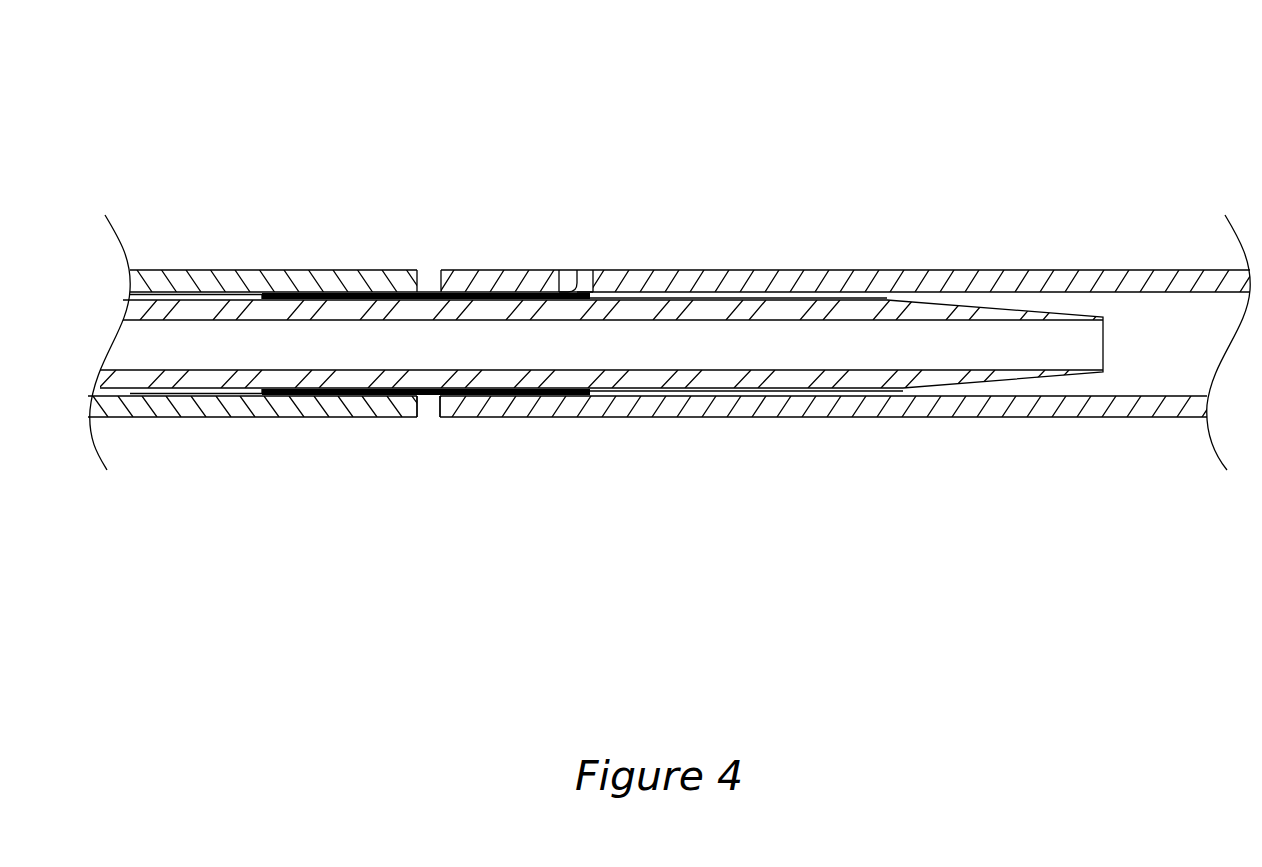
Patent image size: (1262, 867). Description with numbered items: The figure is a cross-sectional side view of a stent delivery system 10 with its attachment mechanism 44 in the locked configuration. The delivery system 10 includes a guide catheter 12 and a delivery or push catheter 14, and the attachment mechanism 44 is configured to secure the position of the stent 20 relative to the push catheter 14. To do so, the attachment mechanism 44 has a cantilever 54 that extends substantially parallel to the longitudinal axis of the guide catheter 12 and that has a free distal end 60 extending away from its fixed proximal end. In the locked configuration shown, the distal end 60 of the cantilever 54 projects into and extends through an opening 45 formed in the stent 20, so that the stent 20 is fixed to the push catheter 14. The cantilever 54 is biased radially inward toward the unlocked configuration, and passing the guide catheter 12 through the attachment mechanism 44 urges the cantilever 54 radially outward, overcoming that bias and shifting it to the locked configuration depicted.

The delivery system 10 is at (660, 260).
The guide catheter 12 is at (858, 305).
The push catheter 14 is at (227, 277).
The stent 20 is at (752, 280).
The attachment mechanism 44 is at (426, 399).
The opening 45 is at (587, 279).
The cantilever 54 is at (528, 300).
The free distal end 60 is at (577, 271).